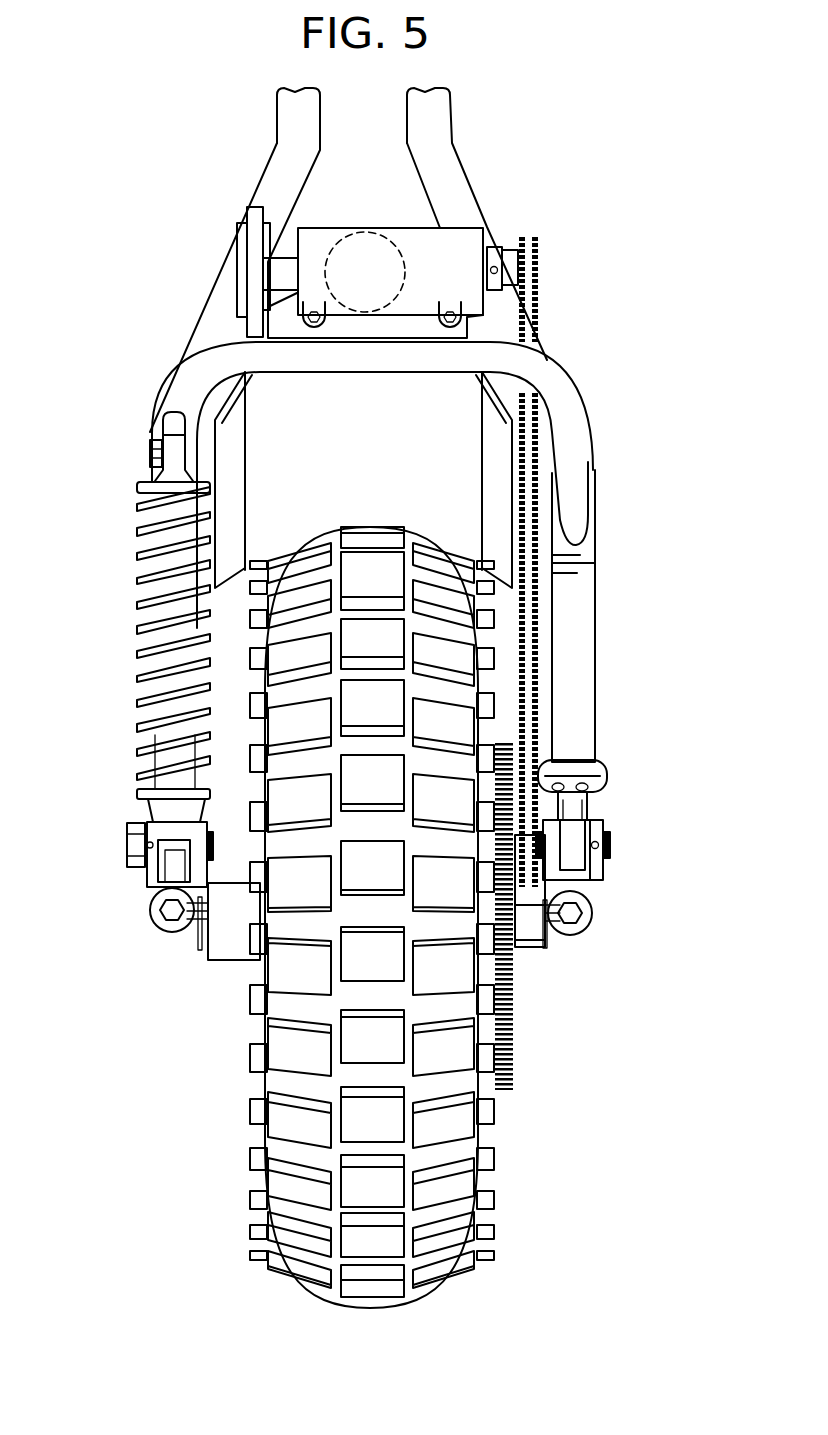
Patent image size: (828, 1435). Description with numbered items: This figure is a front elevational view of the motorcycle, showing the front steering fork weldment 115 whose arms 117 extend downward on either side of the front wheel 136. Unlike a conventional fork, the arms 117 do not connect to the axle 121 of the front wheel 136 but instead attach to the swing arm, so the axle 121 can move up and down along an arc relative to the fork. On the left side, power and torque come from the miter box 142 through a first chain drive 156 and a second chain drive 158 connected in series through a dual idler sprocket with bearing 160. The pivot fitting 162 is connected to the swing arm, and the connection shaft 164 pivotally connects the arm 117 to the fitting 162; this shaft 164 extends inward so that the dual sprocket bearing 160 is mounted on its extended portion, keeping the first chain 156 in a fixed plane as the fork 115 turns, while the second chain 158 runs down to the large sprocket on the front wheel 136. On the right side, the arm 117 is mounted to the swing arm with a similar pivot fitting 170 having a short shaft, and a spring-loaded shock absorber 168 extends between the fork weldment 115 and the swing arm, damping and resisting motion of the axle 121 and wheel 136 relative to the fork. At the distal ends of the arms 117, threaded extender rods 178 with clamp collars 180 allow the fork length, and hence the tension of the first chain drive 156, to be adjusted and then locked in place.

The front steering fork weldment 115 is at (442, 124).
The arm of the steering fork 117 is at (593, 592).
The axle of the front wheel 121 is at (233, 955).
The front wheel 136 is at (290, 1046).
The miter box 142 is at (462, 288).
The first chain drive 156 is at (538, 300).
The second chain drive 158 is at (514, 1060).
The dual idler sprocket with bearing 160 is at (590, 818).
The pivot fitting 162 is at (596, 878).
The connection shaft 164 is at (610, 846).
The shock absorber 168 is at (160, 603).
The pivot fitting 170 is at (150, 868).
The extender rod 178 is at (610, 790).
The clamp collar 180 is at (600, 758).